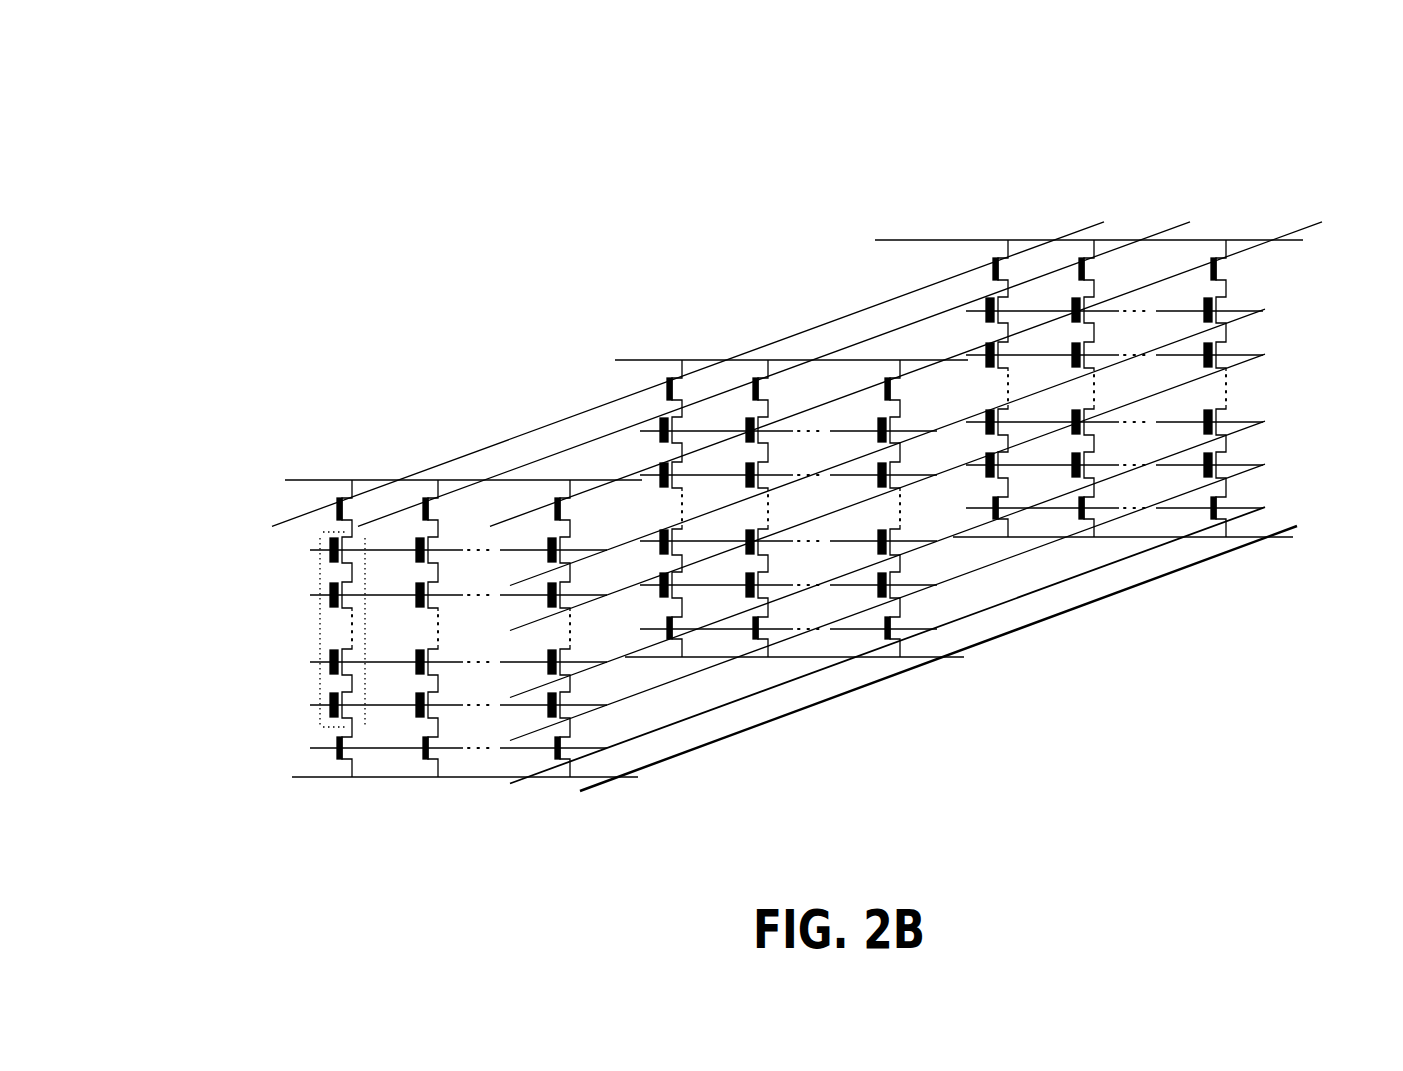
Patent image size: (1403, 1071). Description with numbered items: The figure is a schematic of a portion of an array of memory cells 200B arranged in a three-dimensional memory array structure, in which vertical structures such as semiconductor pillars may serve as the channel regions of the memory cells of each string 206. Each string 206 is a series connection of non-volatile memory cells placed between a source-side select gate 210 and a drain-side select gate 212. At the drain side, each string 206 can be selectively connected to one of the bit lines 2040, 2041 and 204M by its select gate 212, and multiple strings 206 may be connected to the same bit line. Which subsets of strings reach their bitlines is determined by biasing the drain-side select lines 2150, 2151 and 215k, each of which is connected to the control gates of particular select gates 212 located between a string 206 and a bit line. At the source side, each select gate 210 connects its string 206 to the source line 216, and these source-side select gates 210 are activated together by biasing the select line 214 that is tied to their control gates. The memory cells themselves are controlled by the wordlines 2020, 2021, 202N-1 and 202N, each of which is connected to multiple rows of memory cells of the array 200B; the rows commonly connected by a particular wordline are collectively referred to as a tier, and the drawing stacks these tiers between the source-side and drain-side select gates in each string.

The array of memory cells 200B is at (200, 77).
The bit line 2040 is at (305, 480).
The bit line 2041 is at (660, 358).
The bit line 204M is at (920, 240).
The select gate 212 is at (338, 478).
The string of memory cells 206 is at (318, 632).
The select gate 210 is at (335, 778).
The wordline 202N is at (1237, 315).
The wordline 202N-1 is at (1237, 363).
The wordline 2021 is at (1237, 430).
The wordline 2020 is at (1237, 473).
The select line 214 is at (1135, 553).
The source line 216 is at (987, 645).
The select line 2150 is at (1085, 222).
The select line 2151 is at (1170, 222).
The select line 215k is at (1305, 228).